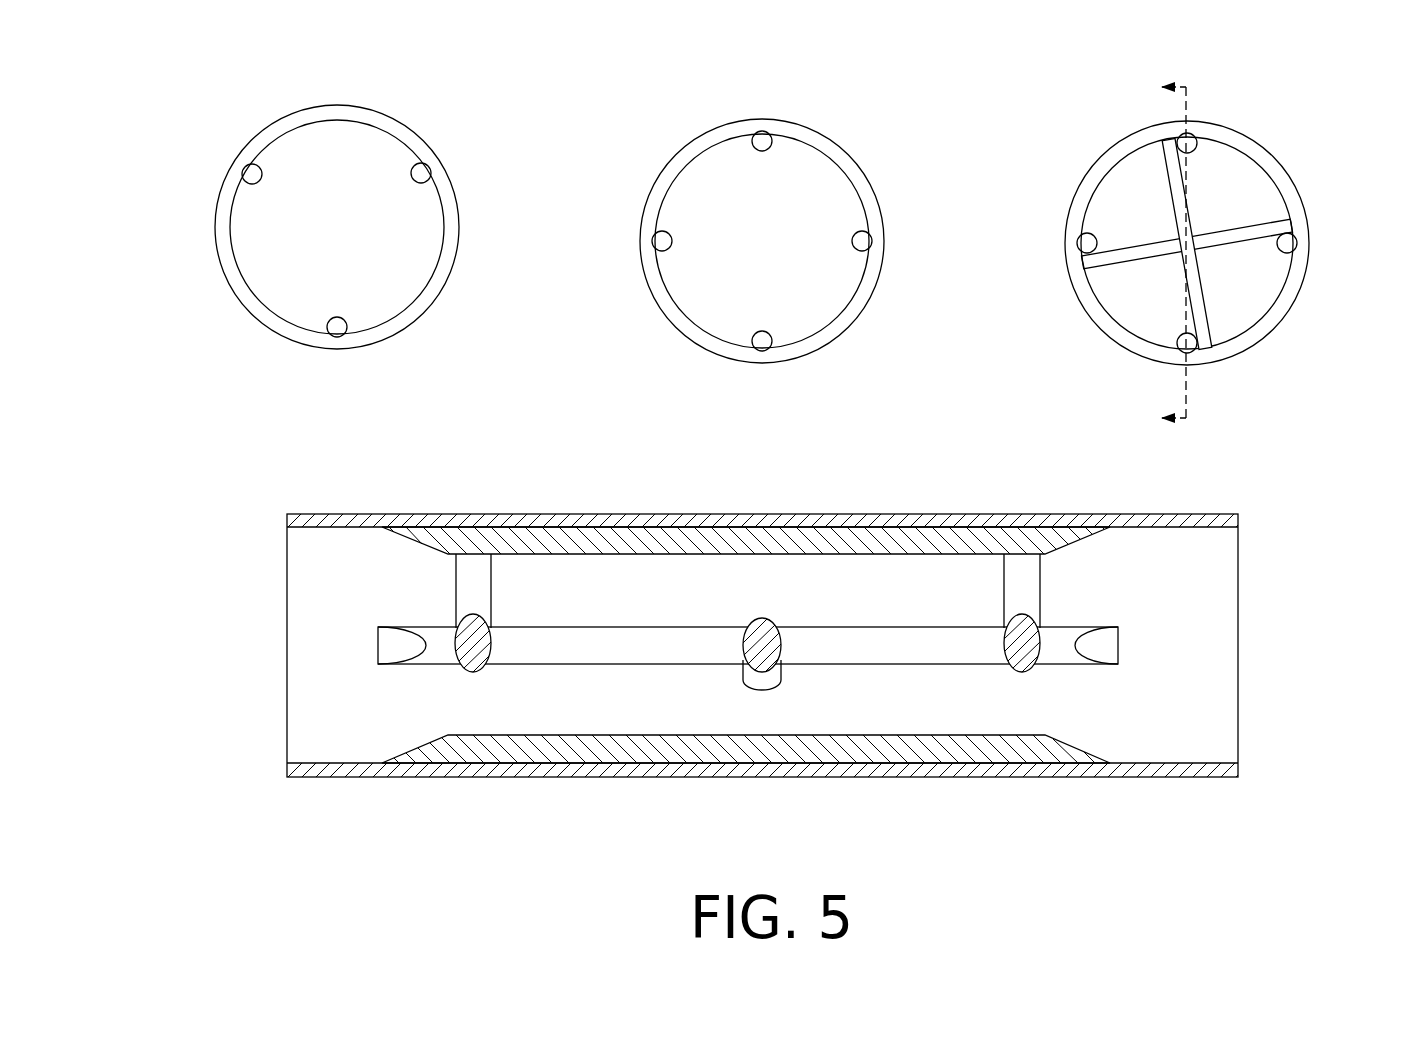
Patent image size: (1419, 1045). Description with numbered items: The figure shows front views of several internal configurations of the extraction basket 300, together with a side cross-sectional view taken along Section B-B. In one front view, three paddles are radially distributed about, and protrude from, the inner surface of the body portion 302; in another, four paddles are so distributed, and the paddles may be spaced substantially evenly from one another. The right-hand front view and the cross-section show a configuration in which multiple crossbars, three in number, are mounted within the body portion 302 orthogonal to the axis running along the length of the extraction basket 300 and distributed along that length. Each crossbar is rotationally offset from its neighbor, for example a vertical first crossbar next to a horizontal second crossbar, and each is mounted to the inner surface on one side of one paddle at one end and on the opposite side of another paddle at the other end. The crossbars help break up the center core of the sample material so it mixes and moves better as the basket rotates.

The extraction basket 300 is at (162, 125).
The body portion 302 is at (222, 273).